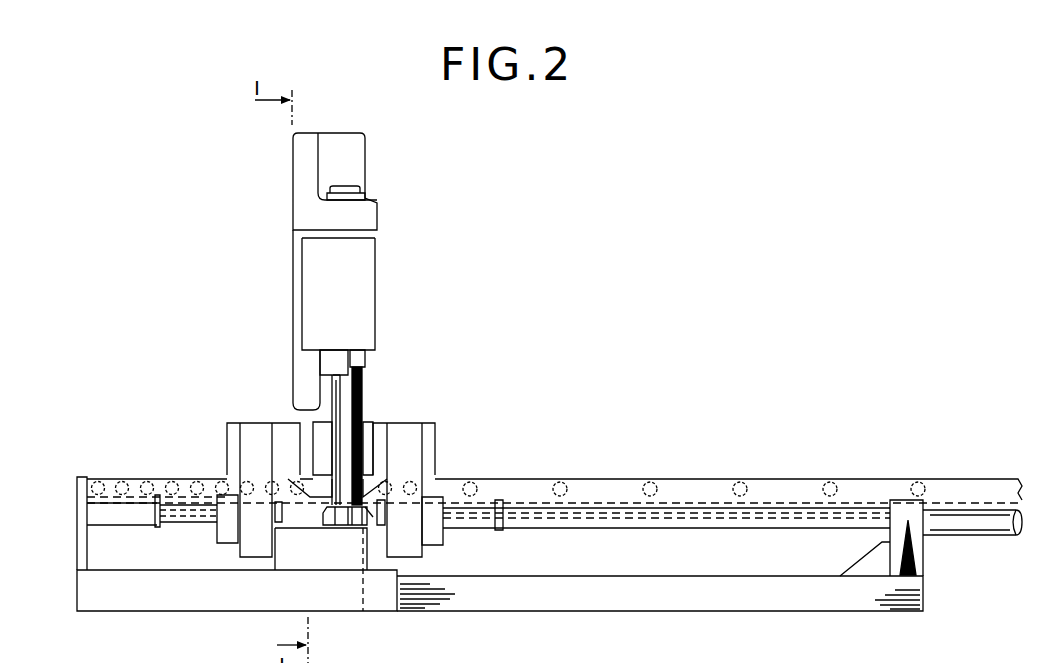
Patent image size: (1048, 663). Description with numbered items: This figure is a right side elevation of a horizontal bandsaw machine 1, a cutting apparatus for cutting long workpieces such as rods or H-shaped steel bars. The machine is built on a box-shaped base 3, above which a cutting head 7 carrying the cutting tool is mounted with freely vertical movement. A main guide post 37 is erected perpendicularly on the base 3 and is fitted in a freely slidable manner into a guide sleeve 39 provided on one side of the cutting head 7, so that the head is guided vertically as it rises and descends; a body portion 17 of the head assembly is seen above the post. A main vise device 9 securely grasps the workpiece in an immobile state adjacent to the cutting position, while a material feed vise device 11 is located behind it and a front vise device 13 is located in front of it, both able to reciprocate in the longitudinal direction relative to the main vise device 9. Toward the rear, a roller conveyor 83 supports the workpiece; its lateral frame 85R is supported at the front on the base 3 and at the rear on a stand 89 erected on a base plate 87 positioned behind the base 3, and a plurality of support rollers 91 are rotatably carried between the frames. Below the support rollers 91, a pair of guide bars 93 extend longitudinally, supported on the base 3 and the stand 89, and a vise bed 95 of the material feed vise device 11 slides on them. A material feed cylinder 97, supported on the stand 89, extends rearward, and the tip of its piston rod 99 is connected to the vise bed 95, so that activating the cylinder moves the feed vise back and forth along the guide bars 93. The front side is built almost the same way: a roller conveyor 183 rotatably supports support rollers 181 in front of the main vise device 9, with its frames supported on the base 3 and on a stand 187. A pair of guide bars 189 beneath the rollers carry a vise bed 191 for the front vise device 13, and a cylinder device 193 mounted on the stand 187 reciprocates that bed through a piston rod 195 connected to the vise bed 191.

The horizontal bandsaw machine 1 is at (252, 200).
The base 3 is at (333, 609).
The cutting head 7 is at (369, 150).
The main vise device 9 is at (366, 417).
The material feed vise device 11 is at (431, 420).
The front vise device 13 is at (258, 420).
The body 17 is at (293, 322).
The main guide post 37 is at (362, 385).
The guide sleeve 39 is at (367, 197).
The roller conveyor 83 is at (691, 479).
The lateral frame 85R is at (796, 488).
The base plate 87 is at (630, 600).
The stand 89 is at (918, 560).
The support rollers 91 is at (648, 485).
The guide bars 93 is at (725, 529).
The vise bed 95 is at (424, 545).
The material feed cylinder 97 is at (974, 531).
The piston rod 99 is at (794, 519).
The support rollers 181 is at (197, 479).
The roller conveyor 183 is at (124, 476).
The stand 187 is at (80, 556).
The guide bars 189 is at (190, 523).
The vise bed 191 is at (252, 552).
The cylinder device 193 is at (130, 526).
The piston rod 195 is at (172, 500).